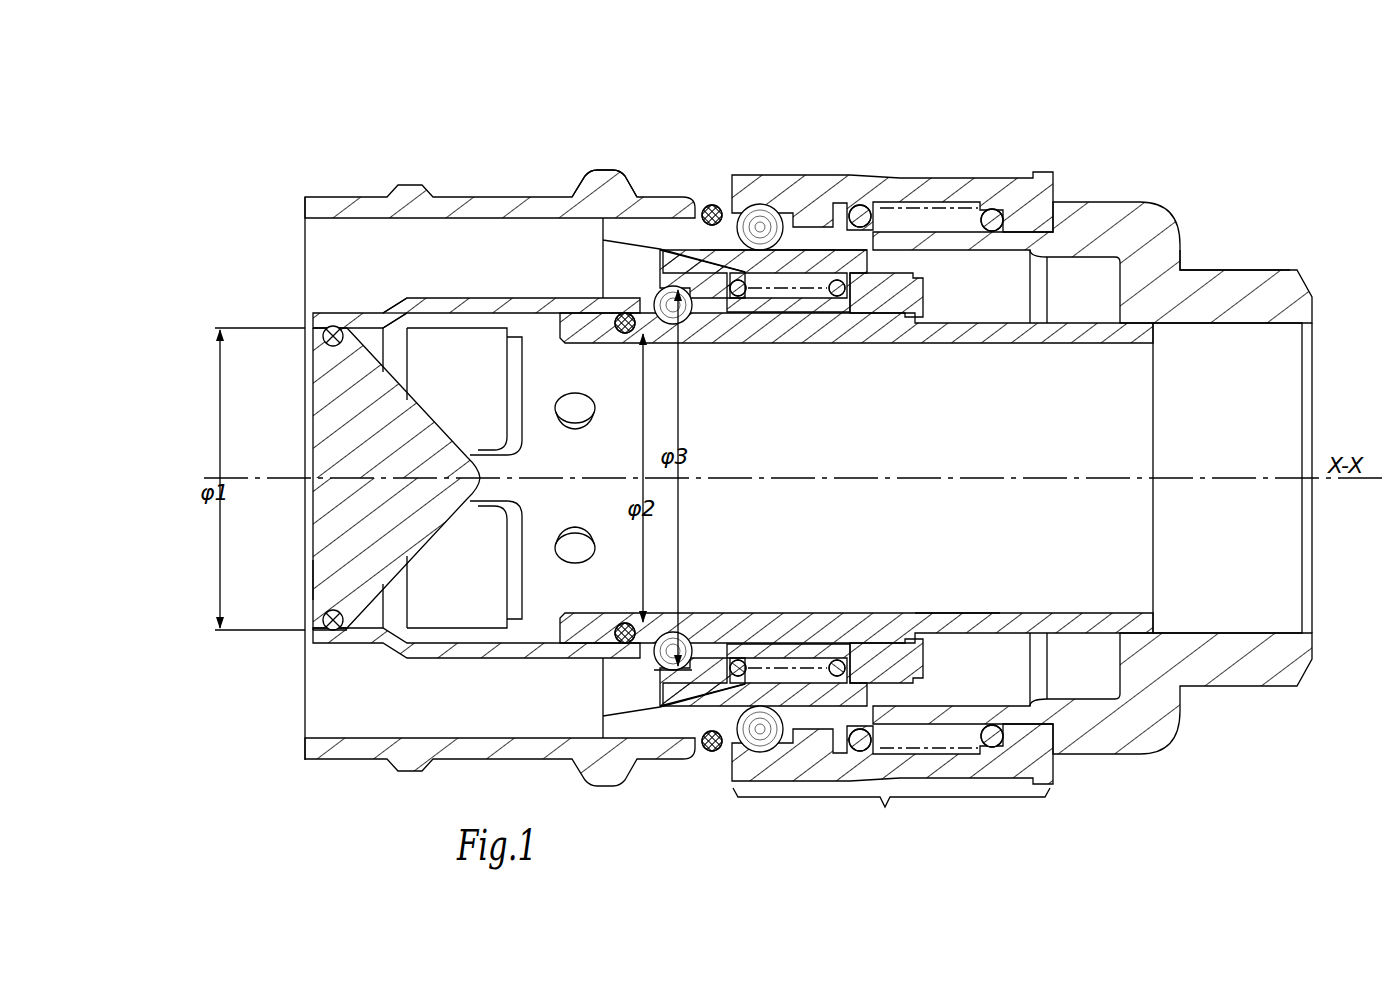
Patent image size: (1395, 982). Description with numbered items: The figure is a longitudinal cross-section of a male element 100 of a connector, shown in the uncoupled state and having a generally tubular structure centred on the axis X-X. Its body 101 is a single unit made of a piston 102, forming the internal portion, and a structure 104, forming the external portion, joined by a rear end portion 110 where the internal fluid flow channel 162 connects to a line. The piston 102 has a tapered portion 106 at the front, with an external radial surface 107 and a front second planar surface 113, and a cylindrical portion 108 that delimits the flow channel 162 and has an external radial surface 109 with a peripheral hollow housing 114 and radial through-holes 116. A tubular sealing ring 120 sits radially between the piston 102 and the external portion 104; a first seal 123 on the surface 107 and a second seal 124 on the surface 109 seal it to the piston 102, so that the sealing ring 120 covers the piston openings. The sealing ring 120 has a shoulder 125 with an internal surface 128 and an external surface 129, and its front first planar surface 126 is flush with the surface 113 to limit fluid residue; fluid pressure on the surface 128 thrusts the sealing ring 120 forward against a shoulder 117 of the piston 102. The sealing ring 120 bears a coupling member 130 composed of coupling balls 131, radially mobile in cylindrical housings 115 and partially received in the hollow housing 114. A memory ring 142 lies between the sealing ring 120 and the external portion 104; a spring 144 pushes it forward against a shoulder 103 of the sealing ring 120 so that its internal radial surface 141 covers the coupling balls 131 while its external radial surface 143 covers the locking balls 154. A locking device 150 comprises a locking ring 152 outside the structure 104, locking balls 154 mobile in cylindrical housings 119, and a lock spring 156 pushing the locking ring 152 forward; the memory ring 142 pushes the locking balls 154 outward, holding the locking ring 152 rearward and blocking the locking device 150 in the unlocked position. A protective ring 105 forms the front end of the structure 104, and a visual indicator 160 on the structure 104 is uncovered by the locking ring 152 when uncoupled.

The male element 100 is at (880, 162).
The body 101 is at (1090, 182).
The piston 102 is at (804, 338).
The shoulder 103 is at (775, 300).
The structure 104 is at (668, 197).
The protective ring 105 is at (418, 190).
The tapered portion 106 is at (345, 442).
The external radial surface 107 is at (333, 327).
The cylindrical portion 108 is at (1137, 201).
The external radial surface 109 is at (882, 262).
The rear end portion 110 is at (1145, 268).
The second planar surface 113 is at (308, 577).
The peripheral hollow housing 114 is at (690, 633).
The cylindrical housings 115 is at (687, 676).
The radial through-holes 116 is at (573, 402).
The shoulder 117 is at (950, 613).
The cylindrical housings 119 is at (787, 750).
The sealing ring 120 is at (462, 298).
The first seal 123 is at (333, 631).
The second seal 124 is at (600, 656).
The shoulder 125 is at (402, 312).
The first planar surface 126 is at (308, 633).
The internal surface 128 is at (406, 322).
The external surface 129 is at (390, 306).
The coupling member 130 is at (645, 670).
The coupling balls 131 is at (683, 318).
The internal radial surface 141 is at (618, 310).
The memory ring 142 is at (665, 268).
The external radial surface 143 is at (862, 209).
The spring 144 is at (760, 258).
The locking device 150 is at (891, 812).
The locking ring 152 is at (813, 178).
The locking balls 154 is at (762, 215).
The lock spring 156 is at (993, 209).
The visual indicator 160 is at (713, 205).
The internal fluid flow channel 162 is at (1247, 420).